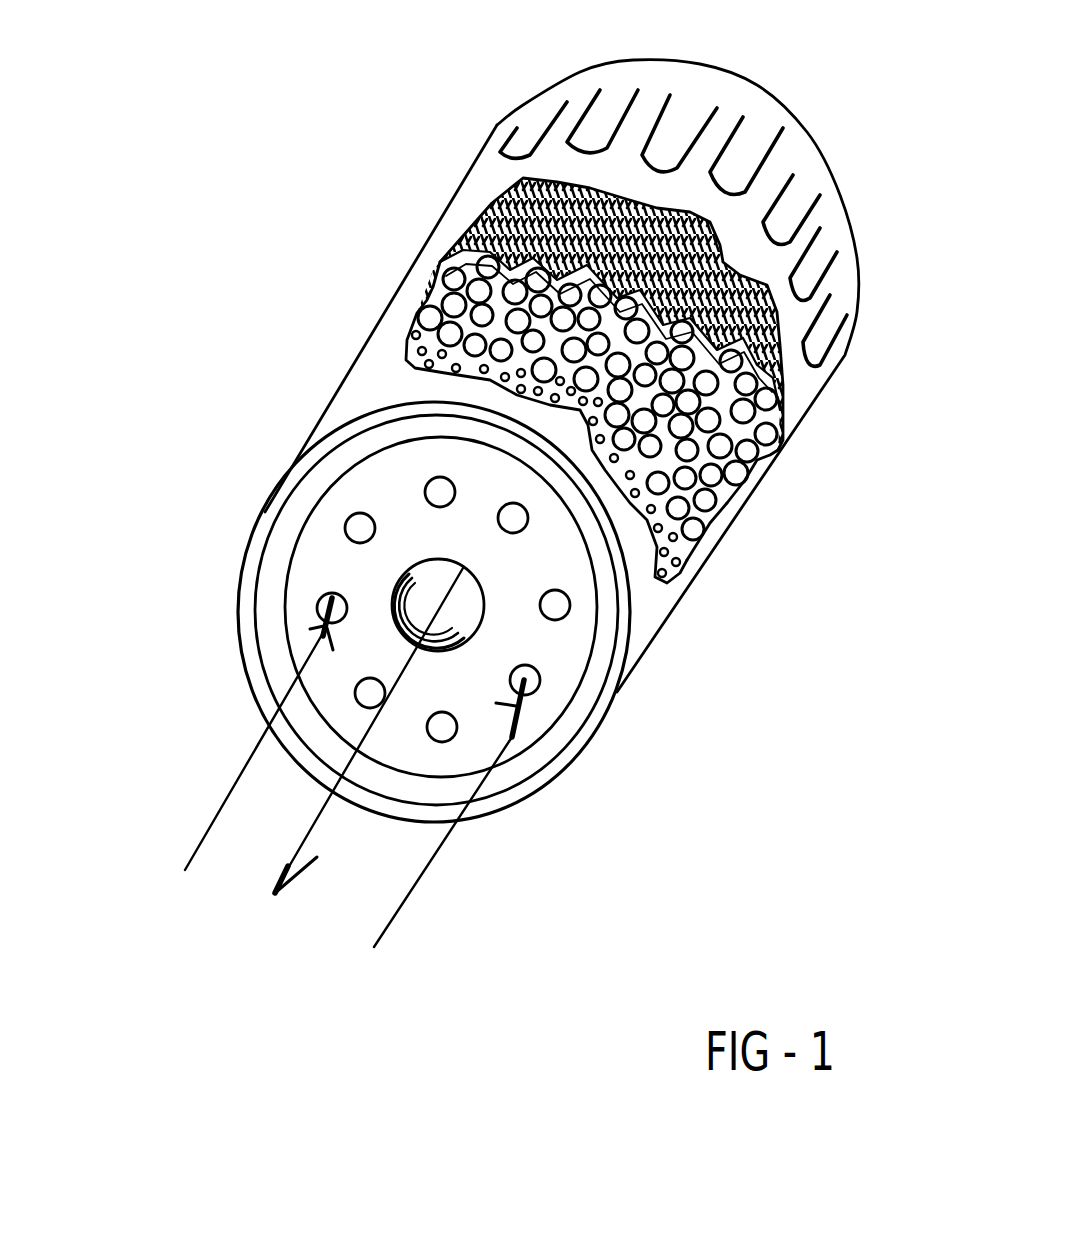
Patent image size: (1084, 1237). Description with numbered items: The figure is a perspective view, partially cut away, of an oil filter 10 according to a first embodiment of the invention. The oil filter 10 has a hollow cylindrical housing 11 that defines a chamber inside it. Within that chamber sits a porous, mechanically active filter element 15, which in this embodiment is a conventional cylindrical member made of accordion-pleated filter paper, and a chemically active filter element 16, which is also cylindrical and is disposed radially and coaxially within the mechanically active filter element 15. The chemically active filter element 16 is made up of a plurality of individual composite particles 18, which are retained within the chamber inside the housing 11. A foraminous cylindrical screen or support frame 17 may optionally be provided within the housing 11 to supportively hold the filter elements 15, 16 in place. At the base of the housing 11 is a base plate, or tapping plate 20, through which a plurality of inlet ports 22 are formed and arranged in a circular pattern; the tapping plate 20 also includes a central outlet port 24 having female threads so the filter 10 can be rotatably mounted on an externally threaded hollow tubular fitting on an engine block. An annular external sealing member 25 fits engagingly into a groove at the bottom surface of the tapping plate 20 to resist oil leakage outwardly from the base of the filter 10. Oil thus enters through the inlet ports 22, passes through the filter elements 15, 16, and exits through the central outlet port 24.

The oil filter 10 is at (390, 150).
The hollow cylindrical housing 11 is at (368, 388).
The mechanically active filter element 15 is at (482, 227).
The chemically active filter element 16 is at (703, 457).
The foraminous cylindrical screen or support frame 17 is at (677, 525).
The composite particles 18 is at (410, 343).
The tapping plate 20 is at (311, 553).
The inlet ports 22 is at (556, 608).
The central outlet port 24 is at (440, 570).
The annular external sealing member 25 is at (528, 765).